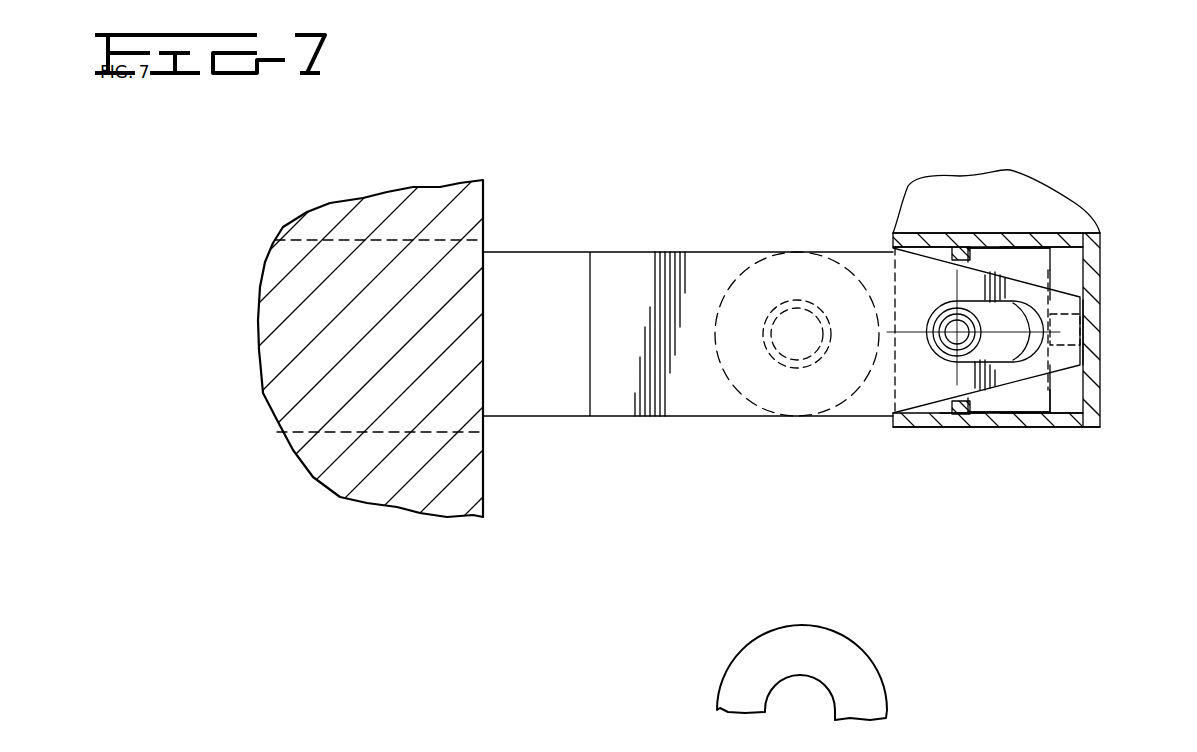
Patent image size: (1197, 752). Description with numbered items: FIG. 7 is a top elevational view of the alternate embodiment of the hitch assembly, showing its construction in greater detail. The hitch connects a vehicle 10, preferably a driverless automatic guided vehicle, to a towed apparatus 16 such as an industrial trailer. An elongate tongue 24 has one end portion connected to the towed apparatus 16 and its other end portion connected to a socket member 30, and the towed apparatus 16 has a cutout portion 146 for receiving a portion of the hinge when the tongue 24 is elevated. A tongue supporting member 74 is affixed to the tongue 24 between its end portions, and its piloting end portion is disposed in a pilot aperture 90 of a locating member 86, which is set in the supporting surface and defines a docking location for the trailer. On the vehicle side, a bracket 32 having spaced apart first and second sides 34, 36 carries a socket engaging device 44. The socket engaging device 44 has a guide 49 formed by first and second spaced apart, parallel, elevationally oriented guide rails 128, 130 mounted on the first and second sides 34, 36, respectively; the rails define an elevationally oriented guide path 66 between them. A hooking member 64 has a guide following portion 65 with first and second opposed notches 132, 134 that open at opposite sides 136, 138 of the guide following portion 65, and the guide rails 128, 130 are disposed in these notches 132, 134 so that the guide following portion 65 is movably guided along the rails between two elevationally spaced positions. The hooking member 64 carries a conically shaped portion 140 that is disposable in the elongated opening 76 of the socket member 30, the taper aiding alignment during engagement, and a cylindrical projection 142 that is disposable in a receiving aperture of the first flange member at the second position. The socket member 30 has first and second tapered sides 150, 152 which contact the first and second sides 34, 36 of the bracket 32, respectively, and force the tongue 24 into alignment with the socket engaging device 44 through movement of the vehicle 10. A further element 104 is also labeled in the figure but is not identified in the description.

The vehicle 10 is at (1008, 165).
The towed apparatus 16 is at (258, 363).
The tongue 24 is at (625, 334).
The socket member 30 is at (903, 427).
The bracket 32 is at (1100, 322).
The first side 34 is at (1068, 198).
The second side 36 is at (1063, 427).
The socket engaging device 44 is at (1023, 340).
The guide 49 is at (948, 423).
The hooking member 64 is at (930, 348).
The guide following portion 65 is at (1053, 400).
The guide path 66 is at (995, 323).
The tongue supporting member 74 is at (802, 307).
The opening 76 is at (1085, 307).
The locating member 86 is at (750, 262).
The pilot aperture 90 is at (828, 695).
The housing wall portion 104 is at (947, 228).
The first guide rail 128 is at (965, 245).
The second guide rail 130 is at (955, 423).
The first notch 132 is at (977, 255).
The second notch 134 is at (982, 388).
The first side of guide following portion 136 is at (1037, 237).
The second side of guide following portion 138 is at (1025, 427).
The conically shaped portion 140 is at (942, 352).
The cylindrical projection 142 is at (933, 317).
The cutout portion 146 is at (450, 243).
The first tapered side 150 is at (1060, 287).
The second tapered side 152 is at (1060, 372).